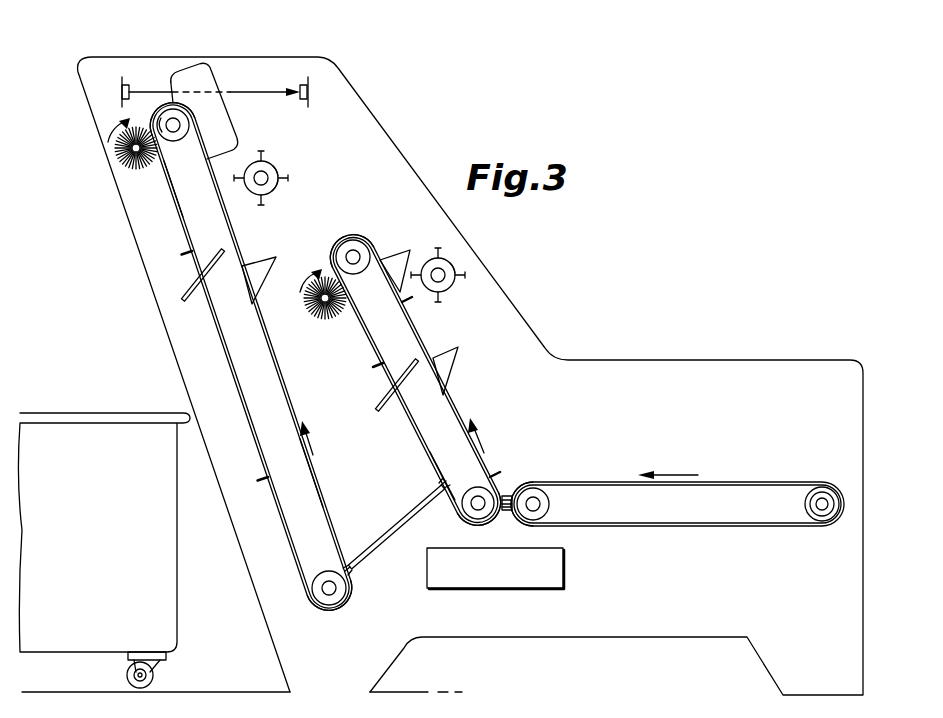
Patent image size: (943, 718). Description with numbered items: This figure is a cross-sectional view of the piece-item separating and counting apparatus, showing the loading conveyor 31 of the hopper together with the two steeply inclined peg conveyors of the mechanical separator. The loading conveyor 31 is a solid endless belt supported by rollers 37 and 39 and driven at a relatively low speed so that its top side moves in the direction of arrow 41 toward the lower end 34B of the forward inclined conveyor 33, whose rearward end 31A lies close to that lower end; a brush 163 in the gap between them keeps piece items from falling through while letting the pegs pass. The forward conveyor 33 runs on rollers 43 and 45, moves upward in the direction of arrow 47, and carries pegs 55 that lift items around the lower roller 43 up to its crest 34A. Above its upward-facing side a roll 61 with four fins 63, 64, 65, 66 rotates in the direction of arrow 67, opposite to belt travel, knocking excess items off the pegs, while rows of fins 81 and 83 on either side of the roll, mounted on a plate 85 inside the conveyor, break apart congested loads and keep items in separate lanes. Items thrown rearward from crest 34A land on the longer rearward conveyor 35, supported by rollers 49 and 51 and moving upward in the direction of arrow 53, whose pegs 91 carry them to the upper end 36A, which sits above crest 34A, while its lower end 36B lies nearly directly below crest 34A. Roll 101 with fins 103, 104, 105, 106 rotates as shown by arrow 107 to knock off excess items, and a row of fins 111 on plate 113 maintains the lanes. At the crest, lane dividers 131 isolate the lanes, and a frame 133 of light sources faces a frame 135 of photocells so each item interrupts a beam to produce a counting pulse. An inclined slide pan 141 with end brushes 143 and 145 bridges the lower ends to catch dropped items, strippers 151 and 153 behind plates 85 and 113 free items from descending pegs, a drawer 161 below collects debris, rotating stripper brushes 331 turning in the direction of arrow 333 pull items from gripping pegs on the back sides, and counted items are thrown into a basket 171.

The loading conveyor 31 is at (770, 484).
The rearward end of loading conveyor 31A is at (515, 487).
The forward steeply inclined conveyor 33 is at (418, 328).
The upper end of forward conveyor 34A is at (356, 236).
The lower end of forward conveyor 34B is at (490, 525).
The rearward steeply inclined conveyor 35 is at (277, 363).
The upper end of rearward conveyor 36A is at (157, 102).
The lower end of rearward conveyor 36B is at (352, 602).
The roller 37 is at (534, 488).
The roller 39 is at (830, 496).
The arrow 41 is at (674, 474).
The lower roller 43 is at (462, 504).
The roller 45 is at (358, 238).
The arrow 47 is at (478, 440).
The roller 49 is at (330, 603).
The roller 51 is at (180, 134).
The arrow 53 is at (312, 438).
The pegs 55 is at (499, 476).
The roll 61 is at (455, 274).
The fin 63 is at (424, 262).
The fin 64 is at (446, 294).
The fin 65 is at (458, 282).
The fin 66 is at (445, 258).
The arrow 67 is at (452, 267).
The row of fins 81 is at (468, 357).
The row of fins 83 is at (408, 232).
The plate 85 is at (447, 428).
The pegs 91 is at (323, 492).
The roll 101 is at (279, 179).
The fin 103 is at (244, 175).
The fin 104 is at (268, 198).
The fin 105 is at (278, 190).
The fin 106 is at (262, 160).
The arrow 107 is at (274, 168).
The row of fins 111 is at (266, 258).
The plate 113 is at (185, 215).
The row of lane dividers 131 is at (214, 75).
The frame supporting light sources 133 is at (124, 77).
The frame supporting photocells 135 is at (305, 77).
The inclined slide pan 141 is at (375, 546).
The brush 143 is at (440, 490).
The brush 145 is at (355, 570).
The stripper 151 is at (380, 397).
The stripper 153 is at (181, 296).
The drawer 161 is at (510, 589).
The brush 163 is at (510, 512).
The basket 171 is at (160, 612).
The strippers 331 is at (120, 160).
The arrow 333 is at (108, 142).